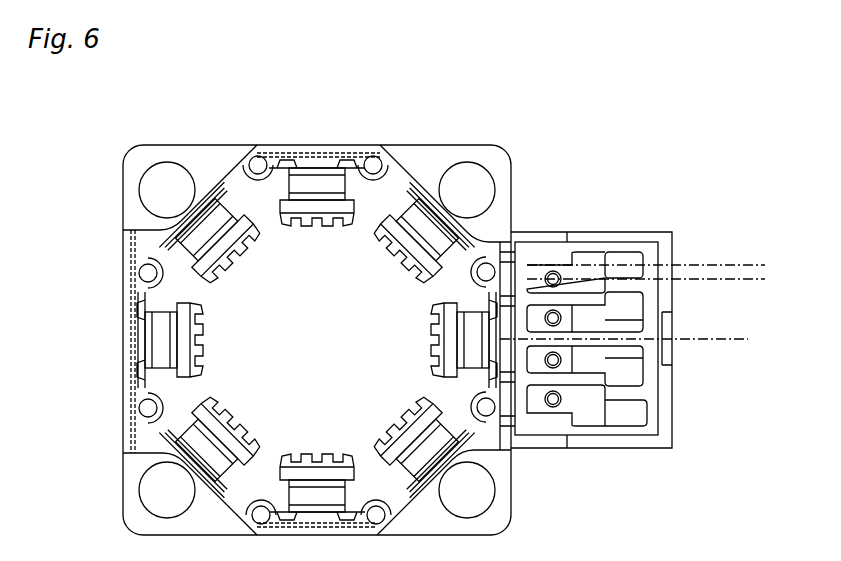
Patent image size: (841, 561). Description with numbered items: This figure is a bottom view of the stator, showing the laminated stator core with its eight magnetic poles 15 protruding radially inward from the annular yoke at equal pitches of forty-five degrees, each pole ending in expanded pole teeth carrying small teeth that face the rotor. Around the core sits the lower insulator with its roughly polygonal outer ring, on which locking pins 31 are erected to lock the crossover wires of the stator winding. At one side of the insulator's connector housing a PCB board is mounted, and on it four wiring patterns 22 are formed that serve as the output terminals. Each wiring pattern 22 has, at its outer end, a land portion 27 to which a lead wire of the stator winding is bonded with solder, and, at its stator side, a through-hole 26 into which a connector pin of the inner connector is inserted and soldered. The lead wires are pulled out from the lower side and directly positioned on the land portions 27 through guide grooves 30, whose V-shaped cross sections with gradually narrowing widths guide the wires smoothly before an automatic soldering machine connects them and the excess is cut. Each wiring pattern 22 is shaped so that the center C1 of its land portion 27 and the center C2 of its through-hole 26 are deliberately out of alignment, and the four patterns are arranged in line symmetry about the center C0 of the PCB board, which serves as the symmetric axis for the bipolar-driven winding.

The magnetic pole 15 is at (223, 432).
The wiring pattern 22 is at (595, 256).
The through-hole 26 is at (553, 268).
The land portion 27 is at (630, 252).
The guide groove 30 is at (512, 417).
The locking pin 31 is at (378, 147).
The center of the PCB board C0 is at (645, 339).
The center of the land portion C1 is at (671, 267).
The center of the through-hole C2 is at (703, 280).